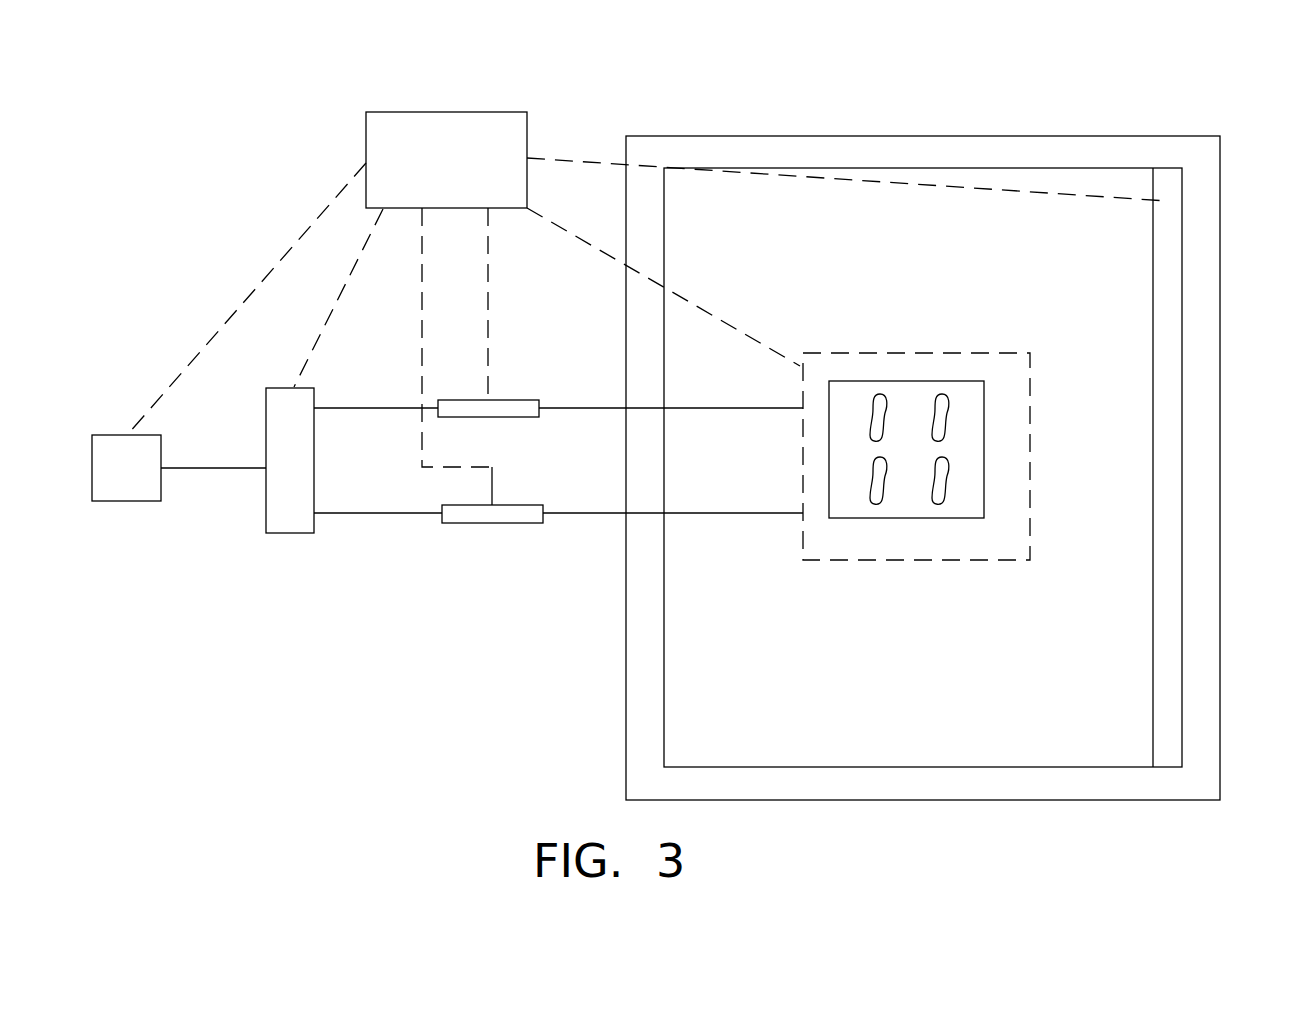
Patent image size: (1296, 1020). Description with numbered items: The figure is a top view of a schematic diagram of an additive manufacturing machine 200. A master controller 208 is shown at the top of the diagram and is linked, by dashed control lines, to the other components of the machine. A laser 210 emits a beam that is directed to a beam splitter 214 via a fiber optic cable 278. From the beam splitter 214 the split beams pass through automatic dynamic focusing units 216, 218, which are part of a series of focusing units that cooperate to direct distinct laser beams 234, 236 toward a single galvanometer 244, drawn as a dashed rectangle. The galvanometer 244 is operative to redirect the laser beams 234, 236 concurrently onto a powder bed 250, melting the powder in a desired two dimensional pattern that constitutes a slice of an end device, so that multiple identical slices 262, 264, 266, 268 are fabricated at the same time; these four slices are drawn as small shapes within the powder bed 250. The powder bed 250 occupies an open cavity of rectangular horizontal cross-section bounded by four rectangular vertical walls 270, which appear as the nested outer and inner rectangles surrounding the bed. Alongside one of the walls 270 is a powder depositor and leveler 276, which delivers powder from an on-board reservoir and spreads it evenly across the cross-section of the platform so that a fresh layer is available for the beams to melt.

The additive manufacturing machine 200 is at (1120, 104).
The master controller 208 is at (437, 135).
The laser 210 is at (120, 487).
The beam splitter 214 is at (284, 516).
The automatic dynamic focusing unit 216 is at (462, 517).
The automatic dynamic focusing unit 218 is at (480, 410).
The laser beam 234 is at (578, 515).
The laser beam 236 is at (587, 406).
The galvanometer 244 is at (963, 350).
The powder bed 250 is at (905, 400).
The slice 262 is at (879, 393).
The slice 264 is at (946, 415).
The slice 266 is at (878, 500).
The slice 268 is at (940, 503).
The vertical wall 270 is at (963, 142).
The powder depositor and leveler 276 is at (1163, 634).
The fiber optic cable 278 is at (194, 466).